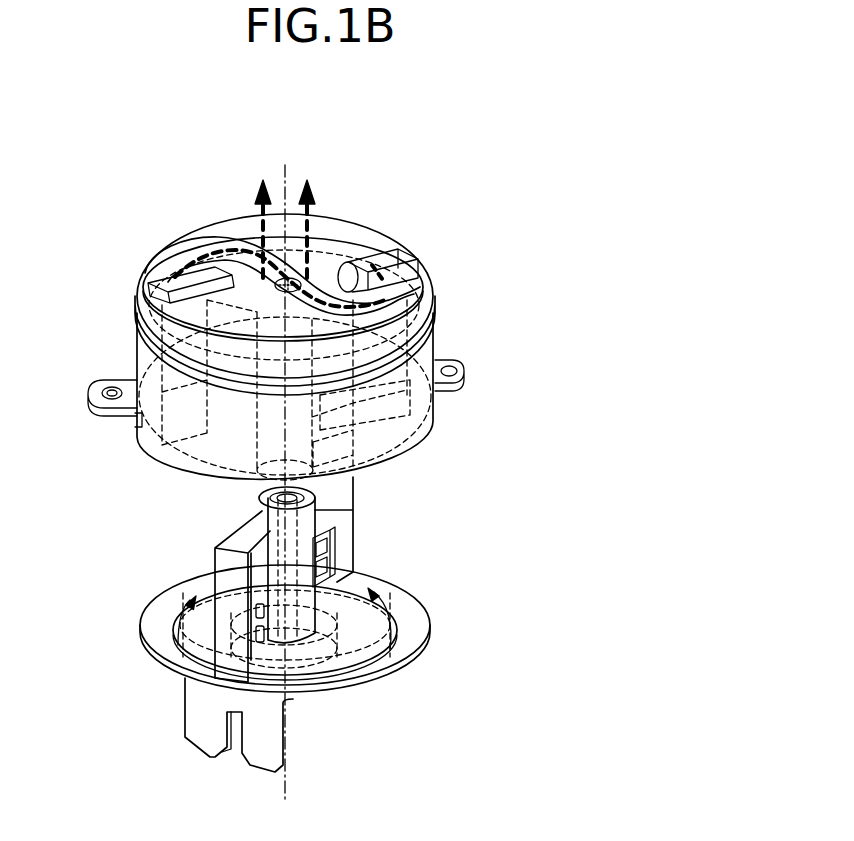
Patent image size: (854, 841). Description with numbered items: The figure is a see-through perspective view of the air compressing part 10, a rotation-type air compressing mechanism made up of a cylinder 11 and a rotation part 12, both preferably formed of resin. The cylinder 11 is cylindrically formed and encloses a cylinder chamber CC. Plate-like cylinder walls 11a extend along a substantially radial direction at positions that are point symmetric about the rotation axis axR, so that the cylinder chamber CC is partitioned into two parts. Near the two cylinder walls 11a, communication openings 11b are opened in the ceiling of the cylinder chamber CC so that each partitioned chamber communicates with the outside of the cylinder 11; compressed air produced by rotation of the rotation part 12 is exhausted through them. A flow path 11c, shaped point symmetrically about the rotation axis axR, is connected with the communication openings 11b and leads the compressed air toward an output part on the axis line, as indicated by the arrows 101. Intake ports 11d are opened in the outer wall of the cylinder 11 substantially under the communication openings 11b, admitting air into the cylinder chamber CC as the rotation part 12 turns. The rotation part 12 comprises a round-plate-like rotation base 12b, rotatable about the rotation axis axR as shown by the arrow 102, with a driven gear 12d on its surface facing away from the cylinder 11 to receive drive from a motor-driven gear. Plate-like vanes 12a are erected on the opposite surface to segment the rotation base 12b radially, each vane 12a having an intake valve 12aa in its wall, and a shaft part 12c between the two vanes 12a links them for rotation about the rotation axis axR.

The air compressing part 10 is at (492, 168).
The cylinder 11 is at (465, 299).
The cylinder walls 11a is at (157, 470).
The communication openings 11b is at (162, 292).
The flow path 11c is at (194, 238).
The intake ports 11d is at (123, 434).
The rotation part 12 is at (448, 580).
The vanes 12a is at (240, 526).
The intake valve 12aa is at (259, 580).
The rotation base 12b is at (412, 620).
The shaft part 12c is at (257, 490).
The driven gear 12d is at (400, 660).
The arrows 101 is at (325, 305).
The arrow 102 is at (145, 607).
The cylinder chamber CC is at (410, 413).
The rotation axis axR is at (285, 469).